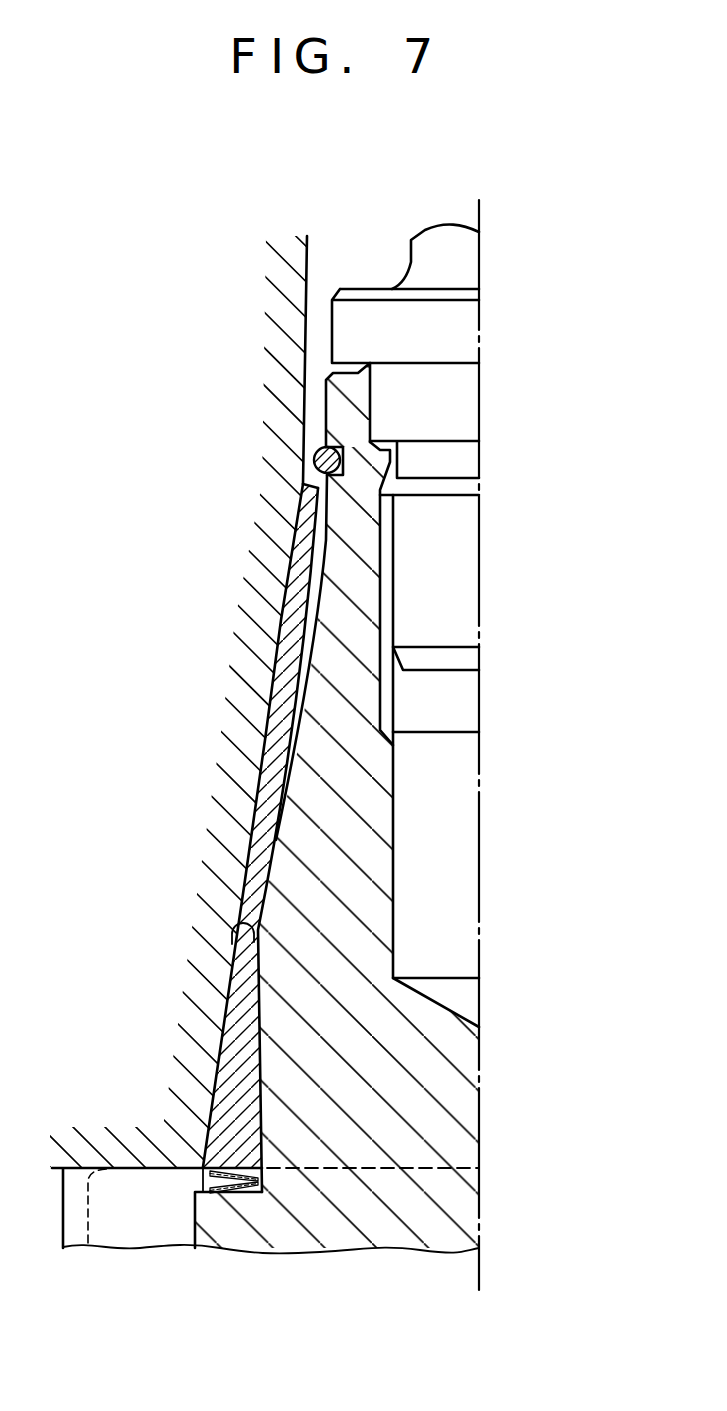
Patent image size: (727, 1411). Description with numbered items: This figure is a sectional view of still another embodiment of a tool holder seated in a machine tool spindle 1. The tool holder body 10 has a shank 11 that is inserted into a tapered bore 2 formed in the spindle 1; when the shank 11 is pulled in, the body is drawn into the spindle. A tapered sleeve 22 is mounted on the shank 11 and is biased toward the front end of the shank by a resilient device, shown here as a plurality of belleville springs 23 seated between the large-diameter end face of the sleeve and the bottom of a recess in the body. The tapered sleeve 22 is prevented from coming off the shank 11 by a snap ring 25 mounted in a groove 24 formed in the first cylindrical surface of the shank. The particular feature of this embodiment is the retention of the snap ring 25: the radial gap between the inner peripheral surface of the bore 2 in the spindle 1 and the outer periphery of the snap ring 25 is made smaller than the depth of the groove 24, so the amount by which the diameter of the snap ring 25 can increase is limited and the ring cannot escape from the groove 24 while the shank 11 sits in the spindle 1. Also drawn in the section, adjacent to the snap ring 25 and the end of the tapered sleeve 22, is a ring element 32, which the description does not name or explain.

The spindle 1 is at (93, 1140).
The tapered bore 2 is at (233, 944).
The body 10 is at (490, 1197).
The shank 11 is at (310, 790).
The tapered sleeve 22 is at (268, 741).
The belleville springs 23 is at (244, 1196).
The groove 24 is at (329, 449).
The snap ring 25 is at (302, 488).
The O-ring 32 is at (313, 459).